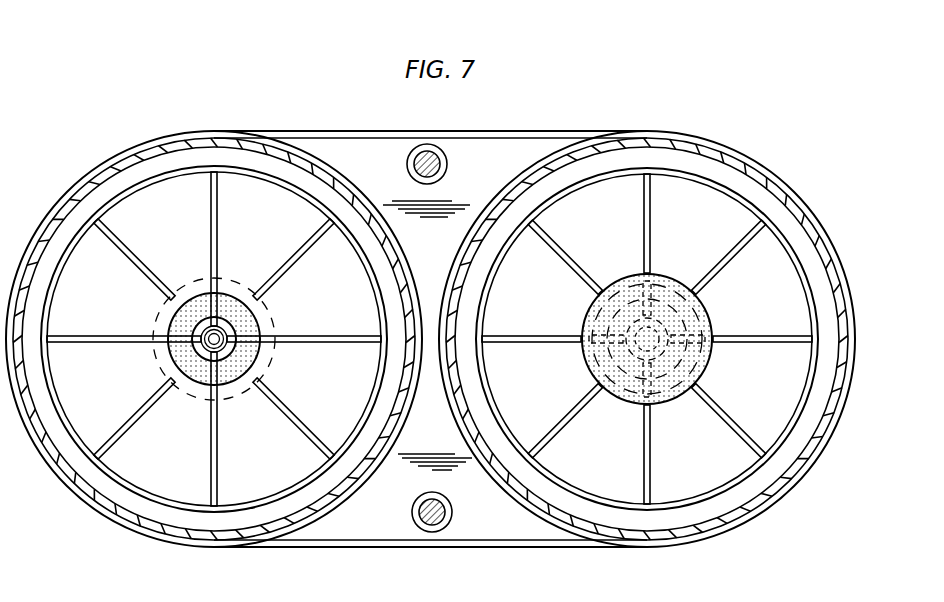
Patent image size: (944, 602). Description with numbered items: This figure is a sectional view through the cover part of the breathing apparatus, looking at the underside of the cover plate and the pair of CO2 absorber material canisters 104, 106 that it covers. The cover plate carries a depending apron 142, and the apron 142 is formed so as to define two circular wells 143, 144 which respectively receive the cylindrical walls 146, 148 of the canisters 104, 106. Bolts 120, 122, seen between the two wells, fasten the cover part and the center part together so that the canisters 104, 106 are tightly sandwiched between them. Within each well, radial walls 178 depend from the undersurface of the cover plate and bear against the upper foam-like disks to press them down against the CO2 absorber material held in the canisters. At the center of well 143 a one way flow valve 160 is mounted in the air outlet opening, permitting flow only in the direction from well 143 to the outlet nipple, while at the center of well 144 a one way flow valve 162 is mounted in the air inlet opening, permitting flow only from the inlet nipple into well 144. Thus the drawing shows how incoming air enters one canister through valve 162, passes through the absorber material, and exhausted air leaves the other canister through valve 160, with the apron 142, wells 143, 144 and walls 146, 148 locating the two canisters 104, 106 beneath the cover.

The CO2 absorber material canister 104 is at (227, 339).
The CO2 absorber material canister 106 is at (647, 339).
The bolt 120 is at (433, 533).
The bolt 122 is at (428, 146).
The apron 142 is at (845, 280).
The well 143 is at (214, 328).
The well 144 is at (647, 339).
The cylindrical wall 146 is at (227, 339).
The cylindrical wall 148 is at (647, 339).
The one way flow valve 160 is at (242, 339).
The one way flow valve 162 is at (672, 339).
The radial walls 178 is at (647, 339).